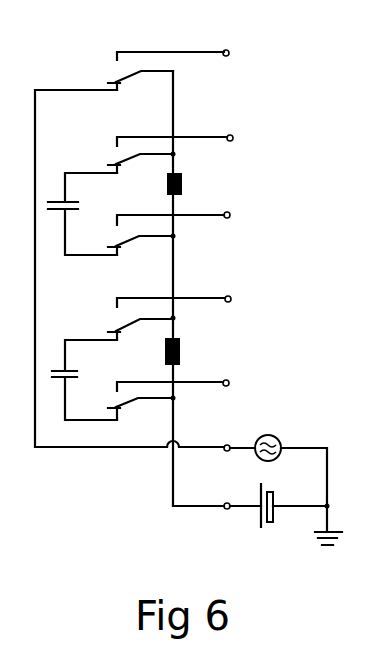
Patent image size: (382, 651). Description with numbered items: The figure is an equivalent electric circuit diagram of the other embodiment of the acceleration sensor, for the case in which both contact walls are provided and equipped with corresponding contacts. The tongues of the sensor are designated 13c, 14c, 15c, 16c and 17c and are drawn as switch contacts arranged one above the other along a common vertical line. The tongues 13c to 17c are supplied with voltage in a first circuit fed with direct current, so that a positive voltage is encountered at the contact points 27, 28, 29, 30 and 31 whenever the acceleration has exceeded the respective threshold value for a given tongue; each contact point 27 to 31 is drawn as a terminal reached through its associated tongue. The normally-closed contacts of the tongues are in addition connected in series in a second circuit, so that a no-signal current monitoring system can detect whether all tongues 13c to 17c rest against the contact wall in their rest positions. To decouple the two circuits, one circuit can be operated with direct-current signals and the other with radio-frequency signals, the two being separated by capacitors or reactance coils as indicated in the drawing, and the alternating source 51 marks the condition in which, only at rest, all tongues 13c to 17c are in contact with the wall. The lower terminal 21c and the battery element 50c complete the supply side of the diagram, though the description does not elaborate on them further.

The contact point 31 is at (229, 48).
The contact point 30 is at (233, 133).
The contact point 29 is at (231, 211).
The contact point 28 is at (232, 291).
The contact point 27 is at (231, 377).
The tongue 17c is at (118, 79).
The tongue 16c is at (118, 156).
The tongue 15c is at (130, 248).
The tongue 14c is at (128, 330).
The tongue 13c is at (118, 408).
The additional column 51 is at (229, 442).
The terminal 21c is at (223, 510).
The battery 50c is at (267, 523).